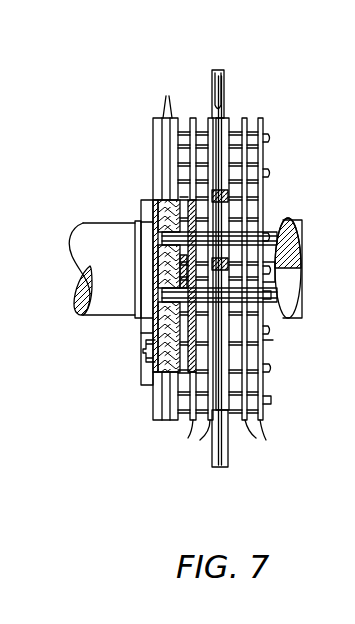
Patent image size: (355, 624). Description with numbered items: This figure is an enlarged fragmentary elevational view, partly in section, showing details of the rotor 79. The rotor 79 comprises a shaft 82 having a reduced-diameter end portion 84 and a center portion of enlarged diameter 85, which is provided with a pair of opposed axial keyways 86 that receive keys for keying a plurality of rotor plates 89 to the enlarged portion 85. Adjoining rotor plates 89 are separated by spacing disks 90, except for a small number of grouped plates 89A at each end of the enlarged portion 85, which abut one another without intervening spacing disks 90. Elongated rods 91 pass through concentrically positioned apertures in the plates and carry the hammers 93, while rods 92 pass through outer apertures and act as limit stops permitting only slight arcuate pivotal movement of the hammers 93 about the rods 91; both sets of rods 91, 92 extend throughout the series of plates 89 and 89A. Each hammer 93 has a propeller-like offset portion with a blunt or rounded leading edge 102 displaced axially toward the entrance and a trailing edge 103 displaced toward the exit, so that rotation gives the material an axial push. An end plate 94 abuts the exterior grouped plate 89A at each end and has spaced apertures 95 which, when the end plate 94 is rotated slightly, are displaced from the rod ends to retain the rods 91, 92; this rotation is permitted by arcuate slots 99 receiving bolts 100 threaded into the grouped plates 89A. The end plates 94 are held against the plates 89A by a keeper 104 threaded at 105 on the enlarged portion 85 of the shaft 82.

The rotor 79 is at (264, 116).
The shaft 82 is at (72, 254).
The end portion 84 is at (100, 324).
The center portion of enlarged diameter 85 is at (290, 306).
The axial keyways 86 is at (291, 272).
The rotor plates 89 is at (200, 438).
The grouped plates 89A is at (171, 97).
The spacing disks 90 is at (265, 228).
The rods 91 is at (254, 270).
The rods 92 is at (266, 240).
The hammers 93 is at (219, 72).
The end plate 94 is at (153, 132).
The spaced apertures 95 is at (170, 214).
The arcuate slots 99 is at (150, 333).
The bolts 100 is at (145, 358).
The leading edge 102 is at (212, 82).
The trailing edge 103 is at (223, 92).
The keeper 104 is at (147, 200).
The threaded portion 105 is at (137, 232).